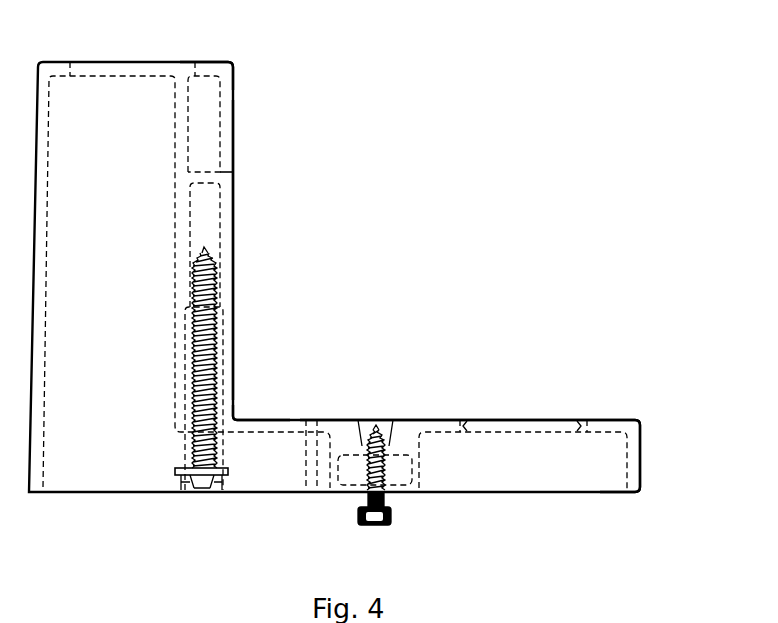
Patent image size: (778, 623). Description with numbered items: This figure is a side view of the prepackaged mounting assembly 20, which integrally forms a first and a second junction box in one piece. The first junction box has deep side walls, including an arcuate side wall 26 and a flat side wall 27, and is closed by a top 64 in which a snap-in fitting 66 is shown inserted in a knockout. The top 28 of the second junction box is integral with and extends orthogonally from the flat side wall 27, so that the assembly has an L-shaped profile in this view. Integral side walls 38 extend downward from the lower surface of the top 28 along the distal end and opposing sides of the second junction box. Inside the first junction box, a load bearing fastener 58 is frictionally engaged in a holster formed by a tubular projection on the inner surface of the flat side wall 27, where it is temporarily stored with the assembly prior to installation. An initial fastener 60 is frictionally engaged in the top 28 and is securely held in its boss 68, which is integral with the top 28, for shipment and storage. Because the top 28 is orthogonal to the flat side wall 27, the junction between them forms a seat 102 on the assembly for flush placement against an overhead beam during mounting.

The prepackaged mounting assembly 20 is at (493, 178).
The arcuate side wall 26 is at (111, 240).
The flat side wall 27 is at (233, 243).
The top 28 is at (419, 420).
The side walls 38 is at (633, 460).
The load bearing fastener 58 is at (172, 473).
The initial fastener 60 is at (383, 527).
The top of the first junction box 64 is at (208, 62).
The fitting 66 is at (82, 622).
The boss 68 is at (417, 460).
The seat 102 is at (280, 420).